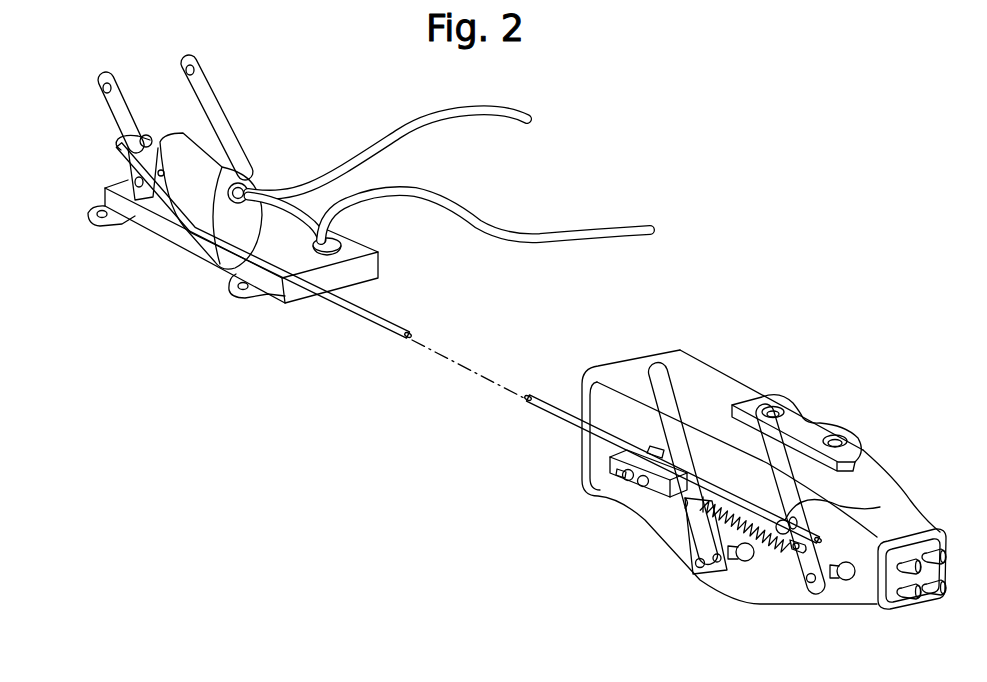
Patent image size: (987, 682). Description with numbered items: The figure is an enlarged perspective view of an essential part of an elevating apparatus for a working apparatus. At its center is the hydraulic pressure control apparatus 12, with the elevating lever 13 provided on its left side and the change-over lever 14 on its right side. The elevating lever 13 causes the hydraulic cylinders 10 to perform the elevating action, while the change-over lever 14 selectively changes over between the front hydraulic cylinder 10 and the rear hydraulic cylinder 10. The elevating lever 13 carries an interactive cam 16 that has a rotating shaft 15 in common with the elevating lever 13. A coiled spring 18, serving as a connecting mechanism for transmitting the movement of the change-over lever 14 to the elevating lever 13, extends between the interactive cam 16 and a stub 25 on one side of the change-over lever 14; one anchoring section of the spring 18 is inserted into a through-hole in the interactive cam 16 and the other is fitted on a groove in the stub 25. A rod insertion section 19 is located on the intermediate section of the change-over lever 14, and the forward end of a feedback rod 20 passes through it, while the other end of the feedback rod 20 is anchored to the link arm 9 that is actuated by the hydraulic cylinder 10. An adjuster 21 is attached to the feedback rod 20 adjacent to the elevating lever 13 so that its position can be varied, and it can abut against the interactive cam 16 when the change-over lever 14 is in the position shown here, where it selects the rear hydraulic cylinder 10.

The link arm 9 is at (110, 76).
The hydraulic cylinder 10 is at (208, 156).
The hydraulic pressure control apparatus 12 is at (717, 378).
The elevating lever 13 is at (653, 370).
The change-over lever 14 is at (762, 400).
The rotating shaft 15 is at (690, 567).
The interactive cam 16 is at (693, 533).
The coiled spring 18 is at (768, 552).
The rod insertion section 19 is at (880, 507).
The feedback rod 20 is at (347, 316).
The adjuster 21 is at (613, 470).
The stub 25 is at (790, 555).